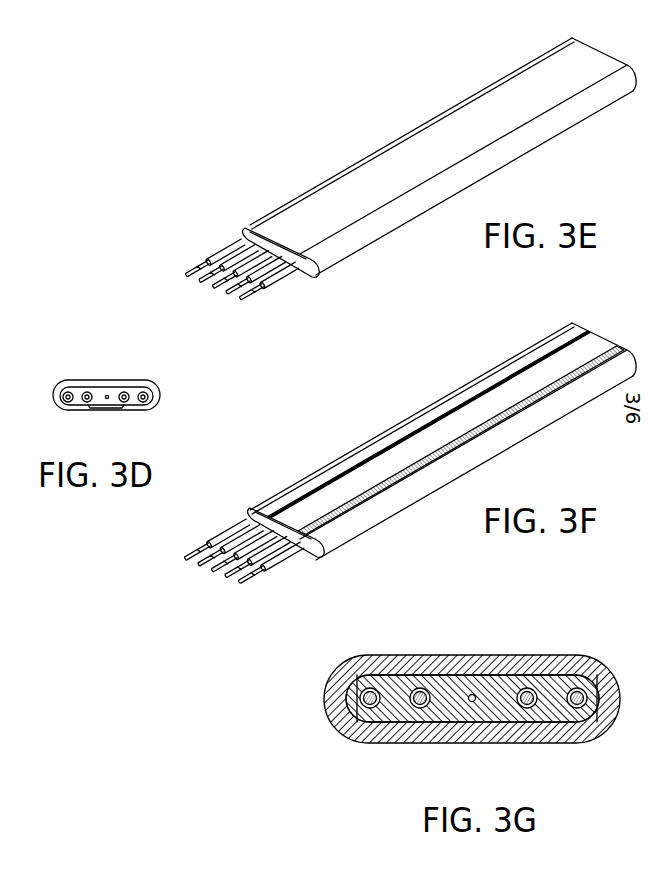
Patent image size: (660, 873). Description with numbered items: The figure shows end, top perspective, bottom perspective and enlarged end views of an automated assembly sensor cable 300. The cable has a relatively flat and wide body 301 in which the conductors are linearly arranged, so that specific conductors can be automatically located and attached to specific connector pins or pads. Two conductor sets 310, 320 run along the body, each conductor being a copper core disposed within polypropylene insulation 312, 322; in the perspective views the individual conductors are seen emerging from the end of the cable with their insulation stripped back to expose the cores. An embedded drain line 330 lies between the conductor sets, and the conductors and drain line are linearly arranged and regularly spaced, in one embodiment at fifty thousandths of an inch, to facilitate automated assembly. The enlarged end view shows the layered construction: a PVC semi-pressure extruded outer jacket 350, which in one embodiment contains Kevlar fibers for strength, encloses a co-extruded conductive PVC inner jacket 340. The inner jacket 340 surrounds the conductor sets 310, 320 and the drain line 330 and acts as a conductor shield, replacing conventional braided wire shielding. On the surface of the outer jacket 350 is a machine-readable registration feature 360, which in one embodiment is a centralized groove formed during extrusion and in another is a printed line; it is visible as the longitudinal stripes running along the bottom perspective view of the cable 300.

In FIG. 3D, the automated assembly sensor cable 300 is at (85, 380).
In FIG. 3E, the automated assembly sensor cable 300 is at (366, 97).
In FIG. 3F, the automated assembly sensor cable 300 is at (368, 379).
In FIG. 3G, the automated assembly sensor cable 300 is at (519, 618).
In FIG. 3E, the body 301 is at (492, 83).
In FIG. 3E, the conductor set 310 is at (188, 276).
In FIG. 3G, the conductor set 310 is at (408, 706).
In FIG. 3E, the polypropylene insulation 312 is at (230, 264).
In FIG. 3E, the conductor set 320 is at (235, 308).
In FIG. 3G, the conductor set 320 is at (570, 714).
In FIG. 3E, the polypropylene insulation 322 is at (287, 280).
In FIG. 3E, the drain line 330 is at (216, 298).
In FIG. 3G, the drain line 330 is at (472, 692).
In FIG. 3E, the inner jacket 340 is at (282, 246).
In FIG. 3G, the inner jacket 340 is at (546, 688).
In FIG. 3E, the outer jacket 350 is at (262, 228).
In FIG. 3G, the outer jacket 350 is at (382, 657).
In FIG. 3F, the registration feature 360 is at (601, 342).
In FIG. 3G, the registration feature 360 is at (443, 742).